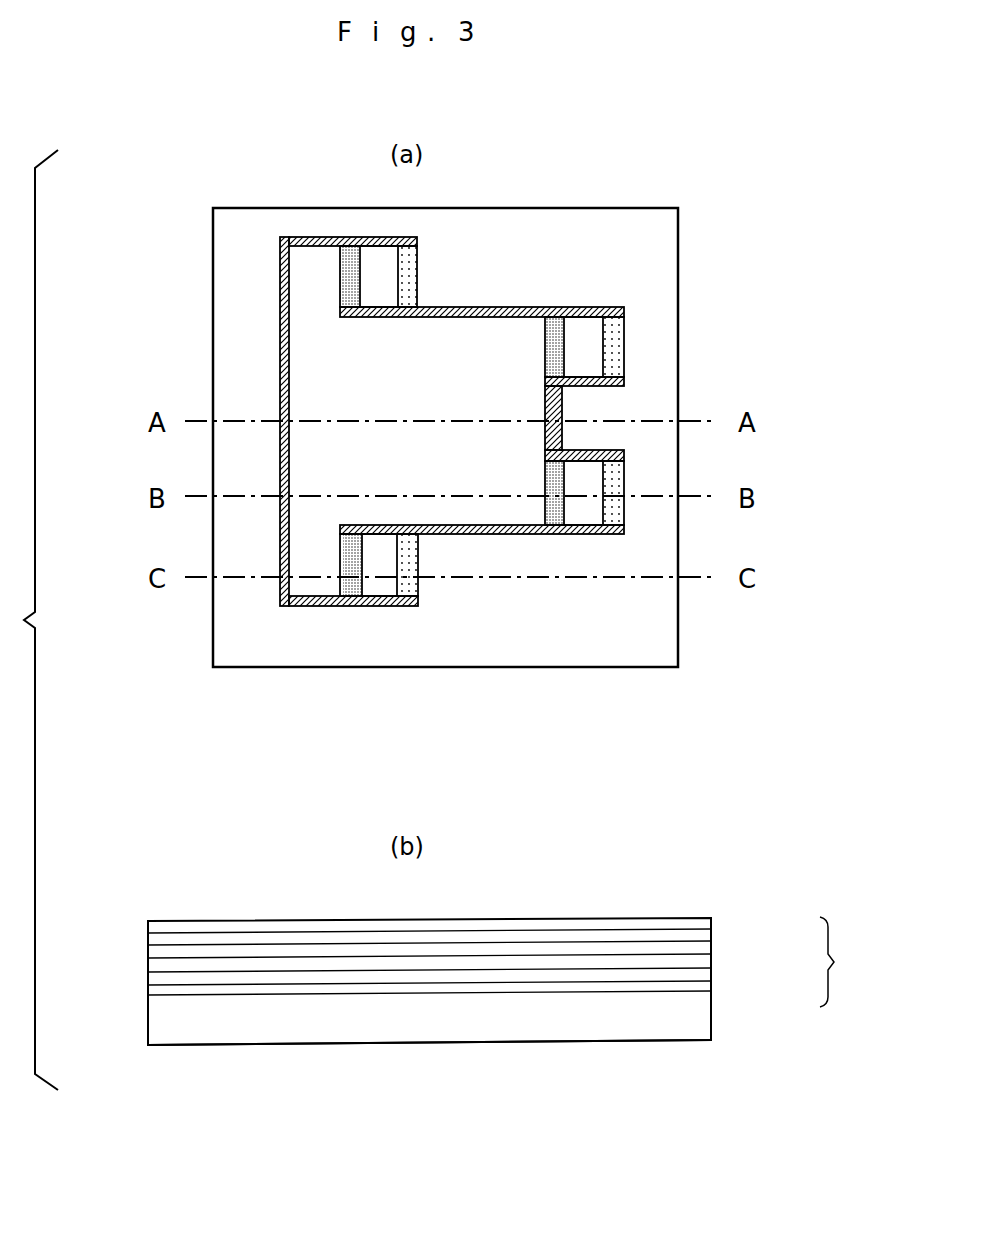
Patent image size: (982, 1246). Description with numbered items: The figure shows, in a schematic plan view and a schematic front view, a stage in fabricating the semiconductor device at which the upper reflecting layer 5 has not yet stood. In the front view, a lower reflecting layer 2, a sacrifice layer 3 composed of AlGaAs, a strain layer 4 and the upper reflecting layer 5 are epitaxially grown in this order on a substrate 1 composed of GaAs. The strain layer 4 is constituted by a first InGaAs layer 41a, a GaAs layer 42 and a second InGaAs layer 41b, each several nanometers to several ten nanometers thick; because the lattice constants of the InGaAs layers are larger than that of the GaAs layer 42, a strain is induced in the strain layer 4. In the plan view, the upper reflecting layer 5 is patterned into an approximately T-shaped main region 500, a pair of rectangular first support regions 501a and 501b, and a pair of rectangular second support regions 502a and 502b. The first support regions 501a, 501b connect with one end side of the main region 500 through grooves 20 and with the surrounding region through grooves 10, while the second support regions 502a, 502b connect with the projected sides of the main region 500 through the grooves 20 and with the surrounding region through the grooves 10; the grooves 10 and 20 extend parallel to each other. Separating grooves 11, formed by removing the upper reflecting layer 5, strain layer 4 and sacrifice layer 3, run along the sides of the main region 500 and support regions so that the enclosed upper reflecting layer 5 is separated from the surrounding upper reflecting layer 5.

The substrate 1 is at (710, 1032).
The lower reflecting layer 2 is at (702, 980).
The sacrifice layer 3 is at (702, 971).
The strain layer 4 is at (845, 962).
The first InGaAs layer 41a is at (702, 959).
The GaAs layer 42 is at (702, 947).
The second InGaAs layer 41b is at (710, 936).
The upper reflecting layer 5 is at (668, 245).
The grooves 10 is at (410, 258).
The separating grooves 11 is at (388, 238).
The grooves 20 is at (353, 285).
The main region 500 is at (435, 352).
The first support region 501a is at (588, 323).
The first support region 501b is at (587, 505).
The second support region 502a is at (372, 260).
The second support region 502b is at (381, 585).